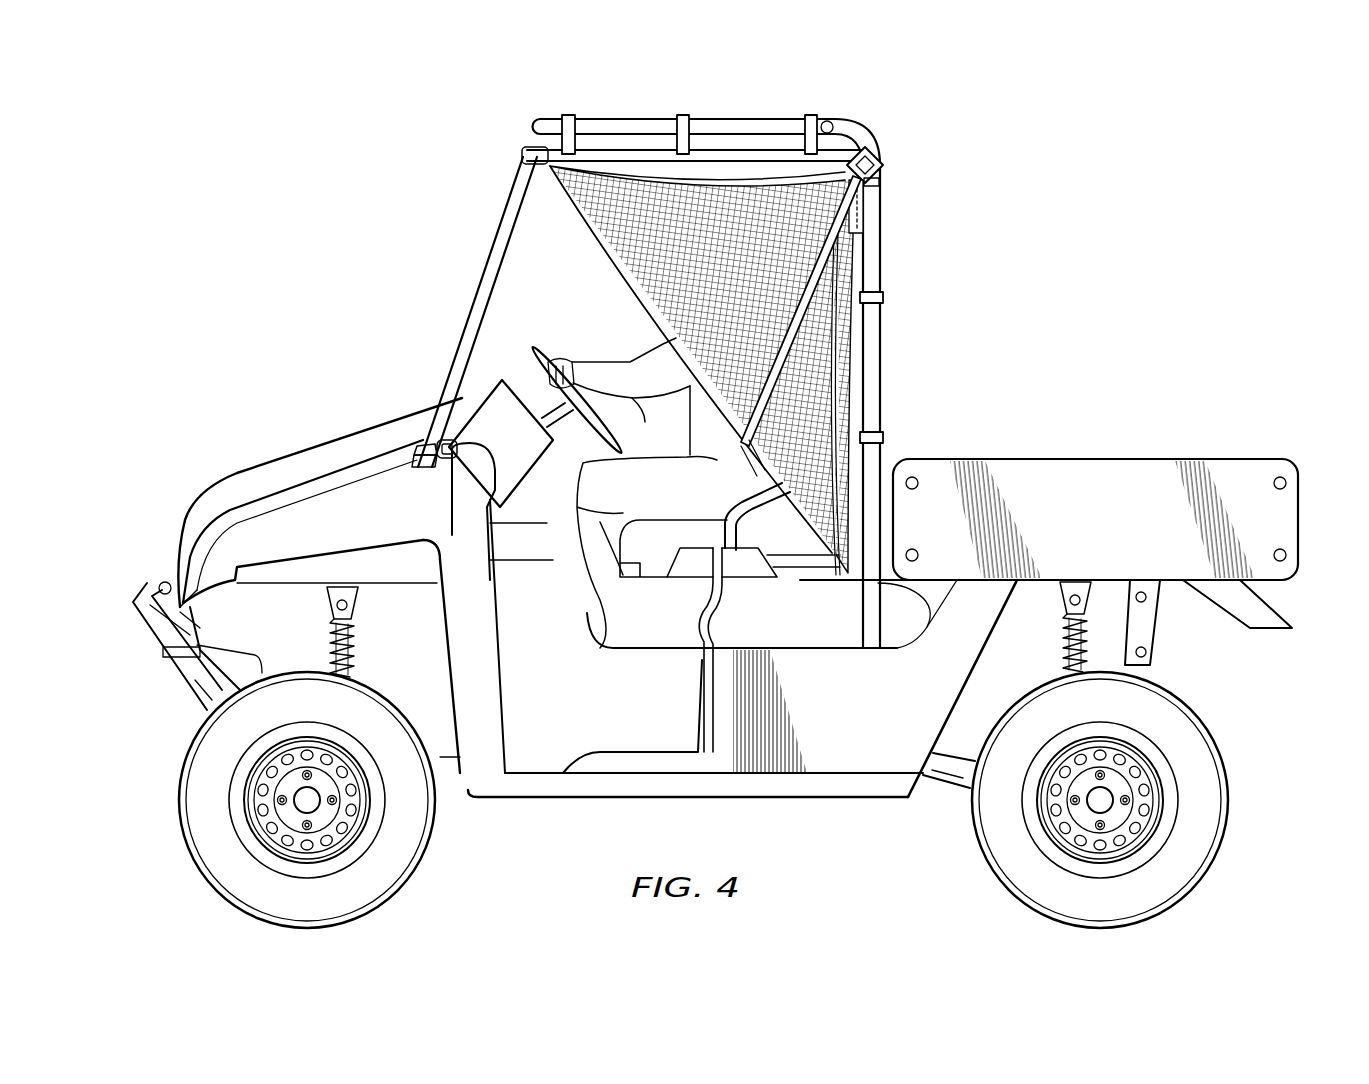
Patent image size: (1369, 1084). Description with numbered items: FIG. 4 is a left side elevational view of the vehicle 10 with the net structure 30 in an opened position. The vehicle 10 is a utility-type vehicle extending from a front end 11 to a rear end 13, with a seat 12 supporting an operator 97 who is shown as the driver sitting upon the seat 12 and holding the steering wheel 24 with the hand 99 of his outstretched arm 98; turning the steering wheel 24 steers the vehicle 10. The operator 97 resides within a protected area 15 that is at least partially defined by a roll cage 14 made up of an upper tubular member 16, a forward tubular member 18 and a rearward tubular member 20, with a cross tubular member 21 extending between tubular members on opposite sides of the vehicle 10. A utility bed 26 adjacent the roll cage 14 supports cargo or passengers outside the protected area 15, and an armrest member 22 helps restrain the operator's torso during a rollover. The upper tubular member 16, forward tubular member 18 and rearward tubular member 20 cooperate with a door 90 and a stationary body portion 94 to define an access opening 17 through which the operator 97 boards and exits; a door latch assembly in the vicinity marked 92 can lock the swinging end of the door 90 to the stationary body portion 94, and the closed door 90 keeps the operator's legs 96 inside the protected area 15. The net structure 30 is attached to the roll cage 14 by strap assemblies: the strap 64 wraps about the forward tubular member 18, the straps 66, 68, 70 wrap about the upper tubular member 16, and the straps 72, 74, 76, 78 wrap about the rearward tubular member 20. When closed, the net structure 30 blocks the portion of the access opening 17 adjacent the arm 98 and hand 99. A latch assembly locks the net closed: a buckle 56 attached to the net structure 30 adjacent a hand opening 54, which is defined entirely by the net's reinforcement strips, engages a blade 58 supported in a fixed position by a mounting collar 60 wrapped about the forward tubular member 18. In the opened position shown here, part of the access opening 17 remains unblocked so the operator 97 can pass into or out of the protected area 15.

The vehicle 10 is at (362, 222).
The front end 11 is at (150, 534).
The seat 12 is at (632, 560).
The rear end 13 is at (1325, 495).
The roll cage 14 is at (477, 237).
The protected area 15 is at (535, 505).
The upper tubular member 16 is at (748, 119).
The access opening 17 is at (492, 352).
The forward tubular member 18 is at (488, 291).
The rearward tubular member 20 is at (883, 354).
The cross tubular member 21 is at (850, 115).
The armrest member 22 is at (730, 513).
The steering wheel 24 is at (540, 348).
The utility bed 26 is at (1088, 452).
The net structure 30 is at (588, 250).
The hand opening 54 is at (862, 236).
The buckle 56 is at (882, 192).
The blade 58 is at (446, 462).
The mounting collar 60 is at (412, 460).
The strap 64 is at (524, 155).
The strap 66 is at (572, 116).
The strap 68 is at (684, 116).
The strap 70 is at (810, 116).
The strap 72 is at (882, 160).
The strap 74 is at (886, 298).
The strap 76 is at (886, 438).
The strap 78 is at (927, 622).
The door 90 is at (632, 722).
The door latch assembly vicinity 92 is at (700, 568).
The stationary body portion 94 is at (835, 722).
The legs 96 is at (586, 602).
The operator 97 is at (562, 532).
The arm 98 is at (638, 400).
The hand 99 is at (582, 370).